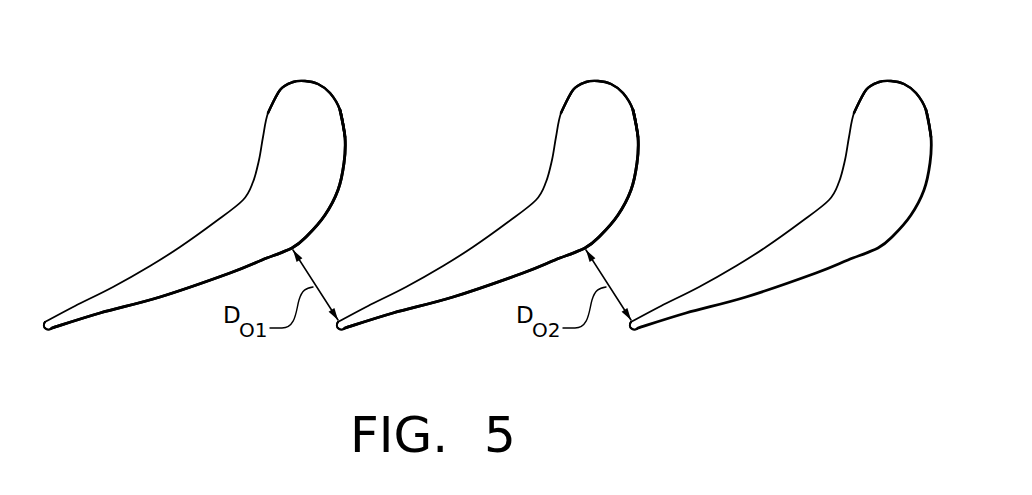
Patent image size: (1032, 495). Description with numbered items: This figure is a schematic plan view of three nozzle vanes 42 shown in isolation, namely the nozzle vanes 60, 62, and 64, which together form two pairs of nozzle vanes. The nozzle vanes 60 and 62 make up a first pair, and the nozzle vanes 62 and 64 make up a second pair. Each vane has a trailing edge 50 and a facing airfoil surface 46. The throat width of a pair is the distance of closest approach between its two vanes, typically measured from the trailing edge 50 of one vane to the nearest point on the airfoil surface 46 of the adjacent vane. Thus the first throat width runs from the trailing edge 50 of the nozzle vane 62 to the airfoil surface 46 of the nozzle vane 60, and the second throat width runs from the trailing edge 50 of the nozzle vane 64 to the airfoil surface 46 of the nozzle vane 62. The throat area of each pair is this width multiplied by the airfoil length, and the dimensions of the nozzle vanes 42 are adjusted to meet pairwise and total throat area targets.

The nozzle vane 42 is at (309, 74).
The airfoil surface 46 is at (363, 219).
The trailing edge 50 is at (356, 349).
The nozzle vane 60 is at (194, 205).
The nozzle vane 62 is at (487, 205).
The nozzle vane 64 is at (780, 205).